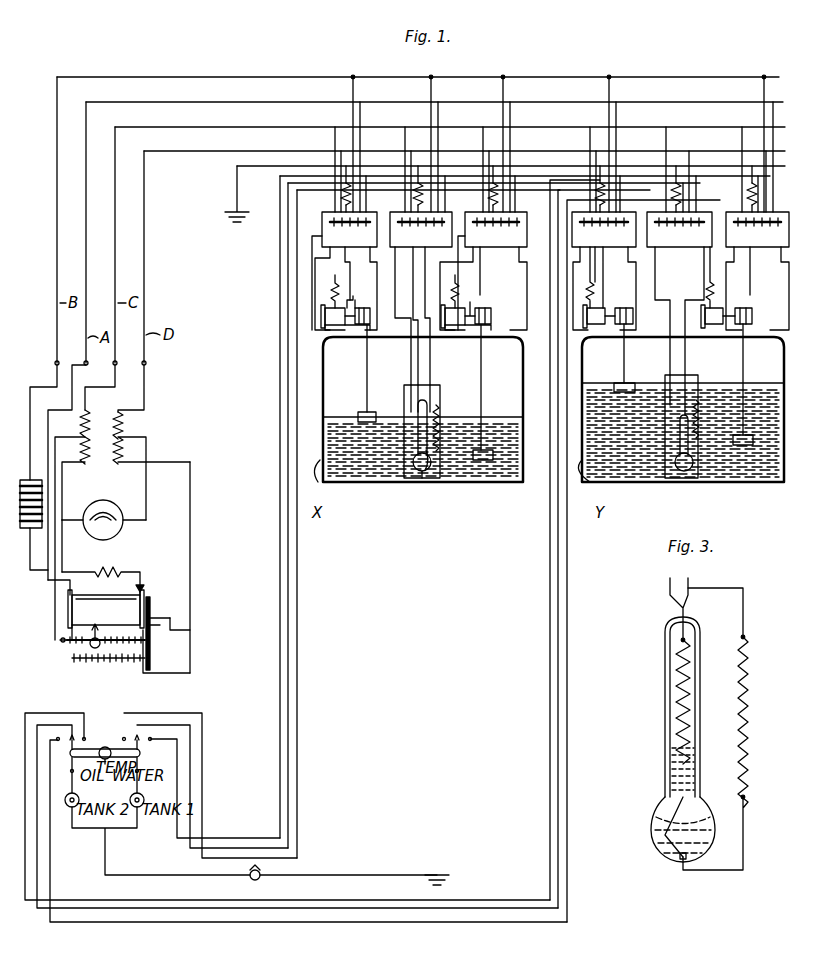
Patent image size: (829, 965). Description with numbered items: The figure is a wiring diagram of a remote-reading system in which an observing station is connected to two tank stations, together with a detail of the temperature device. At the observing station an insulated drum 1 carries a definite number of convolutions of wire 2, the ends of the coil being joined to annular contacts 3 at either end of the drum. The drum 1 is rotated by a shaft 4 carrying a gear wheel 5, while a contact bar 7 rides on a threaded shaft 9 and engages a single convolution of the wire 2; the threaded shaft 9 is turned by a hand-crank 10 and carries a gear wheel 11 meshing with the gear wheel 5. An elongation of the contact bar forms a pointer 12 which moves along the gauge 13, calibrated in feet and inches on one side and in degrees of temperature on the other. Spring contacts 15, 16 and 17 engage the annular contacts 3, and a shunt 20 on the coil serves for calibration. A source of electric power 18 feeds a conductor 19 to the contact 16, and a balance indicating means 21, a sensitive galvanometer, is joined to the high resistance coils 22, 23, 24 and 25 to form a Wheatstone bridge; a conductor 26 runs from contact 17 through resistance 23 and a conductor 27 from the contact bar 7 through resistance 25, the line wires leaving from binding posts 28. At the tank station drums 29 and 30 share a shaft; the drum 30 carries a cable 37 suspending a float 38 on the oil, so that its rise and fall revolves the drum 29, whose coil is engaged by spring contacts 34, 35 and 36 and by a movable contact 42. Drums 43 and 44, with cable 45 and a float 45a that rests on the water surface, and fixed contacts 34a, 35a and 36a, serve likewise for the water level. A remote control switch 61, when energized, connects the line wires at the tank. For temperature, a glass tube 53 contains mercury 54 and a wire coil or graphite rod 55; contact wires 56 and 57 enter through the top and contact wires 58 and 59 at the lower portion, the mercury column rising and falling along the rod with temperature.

In FIG. 1, the insulated drum 1 is at (122, 598).
In FIG. 1, the wire 2 is at (70, 625).
In FIG. 1, the annular circumferential contact 3 is at (66, 600).
In FIG. 1, the shaft 4 is at (160, 618).
In FIG. 1, the gear wheel 5 is at (152, 625).
In FIG. 1, the contact bar 7 is at (98, 636).
In FIG. 1, the threaded shaft 9 is at (90, 645).
In FIG. 1, the hand-crank 10 is at (190, 626).
In FIG. 1, the gear wheel 11 is at (152, 670).
In FIG. 1, the pointer 12 is at (84, 645).
In FIG. 1, the gauge 13 is at (124, 660).
In FIG. 1, the spring contact 15 is at (78, 600).
In FIG. 1, the spring contact 16 is at (143, 587).
In FIG. 1, the spring contact 17 is at (152, 630).
In FIG. 1, the source of electric power 18 is at (42, 496).
In FIG. 1, the conductor 19 is at (30, 570).
In FIG. 1, the shunt 20 is at (110, 572).
In FIG. 1, the balance indicating means 21 is at (110, 507).
In FIG. 1, the high resistance coil 22 is at (122, 424).
In FIG. 1, the high resistance coil 23 is at (122, 447).
In FIG. 1, the high resistance coil 24 is at (84, 424).
In FIG. 1, the high resistance coil 25 is at (82, 449).
In FIG. 1, the conductor 26 is at (190, 504).
In FIG. 1, the conductor 27 is at (63, 518).
In FIG. 1, the binding posts 28 is at (55, 364).
In FIG. 1, the drum 29 is at (349, 302).
In FIG. 1, the drum 30 is at (370, 330).
In FIG. 1, the spring contact 34 is at (330, 330).
In FIG. 1, the fixed contact 34a is at (460, 330).
In FIG. 1, the spring contact 35 is at (363, 308).
In FIG. 1, the fixed contact 35a is at (472, 302).
In FIG. 1, the spring contact 36 is at (360, 330).
In FIG. 1, the fixed contact 36a is at (491, 328).
In FIG. 1, the cable 37 is at (368, 374).
In FIG. 1, the float 38 is at (359, 412).
In FIG. 1, the movable contact 42 is at (337, 305).
In FIG. 1, the drum 43 is at (490, 308).
In FIG. 1, the drum 44 is at (450, 325).
In FIG. 1, the cable 45 is at (483, 378).
In FIG. 1, the float 45a is at (484, 460).
In FIG. 1, the glass tube 53 is at (430, 415).
In FIG. 3, the glass tube 53 is at (668, 722).
In FIG. 3, the mercury 54 is at (670, 785).
In FIG. 1, the wire coil or graphite rod 55 is at (428, 470).
In FIG. 3, the wire coil or graphite rod 55 is at (696, 770).
In FIG. 1, the contact wire 56 is at (413, 402).
In FIG. 3, the contact wire 56 is at (668, 592).
In FIG. 1, the contact wire 57 is at (438, 405).
In FIG. 3, the contact wire 57 is at (695, 582).
In FIG. 1, the contact wire 58 is at (414, 466).
In FIG. 3, the contact wire 58 is at (656, 848).
In FIG. 1, the contact wire 59 is at (425, 478).
In FIG. 3, the contact wire 59 is at (683, 870).
In FIG. 1, the remote control switch 61 is at (555, 161).